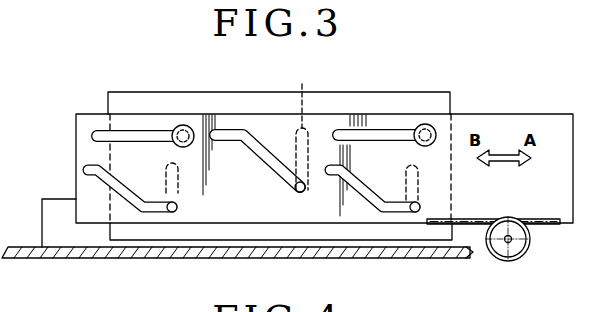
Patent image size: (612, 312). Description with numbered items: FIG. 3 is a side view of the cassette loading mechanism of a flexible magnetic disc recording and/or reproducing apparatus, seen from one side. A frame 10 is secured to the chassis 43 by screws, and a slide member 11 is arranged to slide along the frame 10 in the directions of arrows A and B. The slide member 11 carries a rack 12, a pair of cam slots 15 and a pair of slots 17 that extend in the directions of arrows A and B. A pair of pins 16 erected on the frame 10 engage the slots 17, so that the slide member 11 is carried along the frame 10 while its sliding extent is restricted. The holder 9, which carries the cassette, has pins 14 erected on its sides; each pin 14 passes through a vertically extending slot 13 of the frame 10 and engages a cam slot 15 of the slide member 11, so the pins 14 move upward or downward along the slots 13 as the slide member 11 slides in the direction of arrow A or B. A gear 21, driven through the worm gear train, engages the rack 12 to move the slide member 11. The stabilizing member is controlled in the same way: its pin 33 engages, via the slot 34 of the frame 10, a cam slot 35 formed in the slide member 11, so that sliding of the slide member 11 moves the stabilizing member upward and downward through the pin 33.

The holder 9 is at (62, 205).
The frame 10 is at (150, 100).
The slide member 11 is at (549, 120).
The rack 12 is at (538, 226).
The slot 13 is at (181, 178).
The pin 14 is at (178, 207).
The cam slot 15 is at (127, 187).
The pin 16 is at (183, 125).
The slot 17 is at (124, 133).
The gear 21 is at (515, 248).
The pin 33 is at (297, 193).
The slot 34 is at (300, 127).
The cam slot 35 is at (229, 133).
The chassis 43 is at (57, 259).